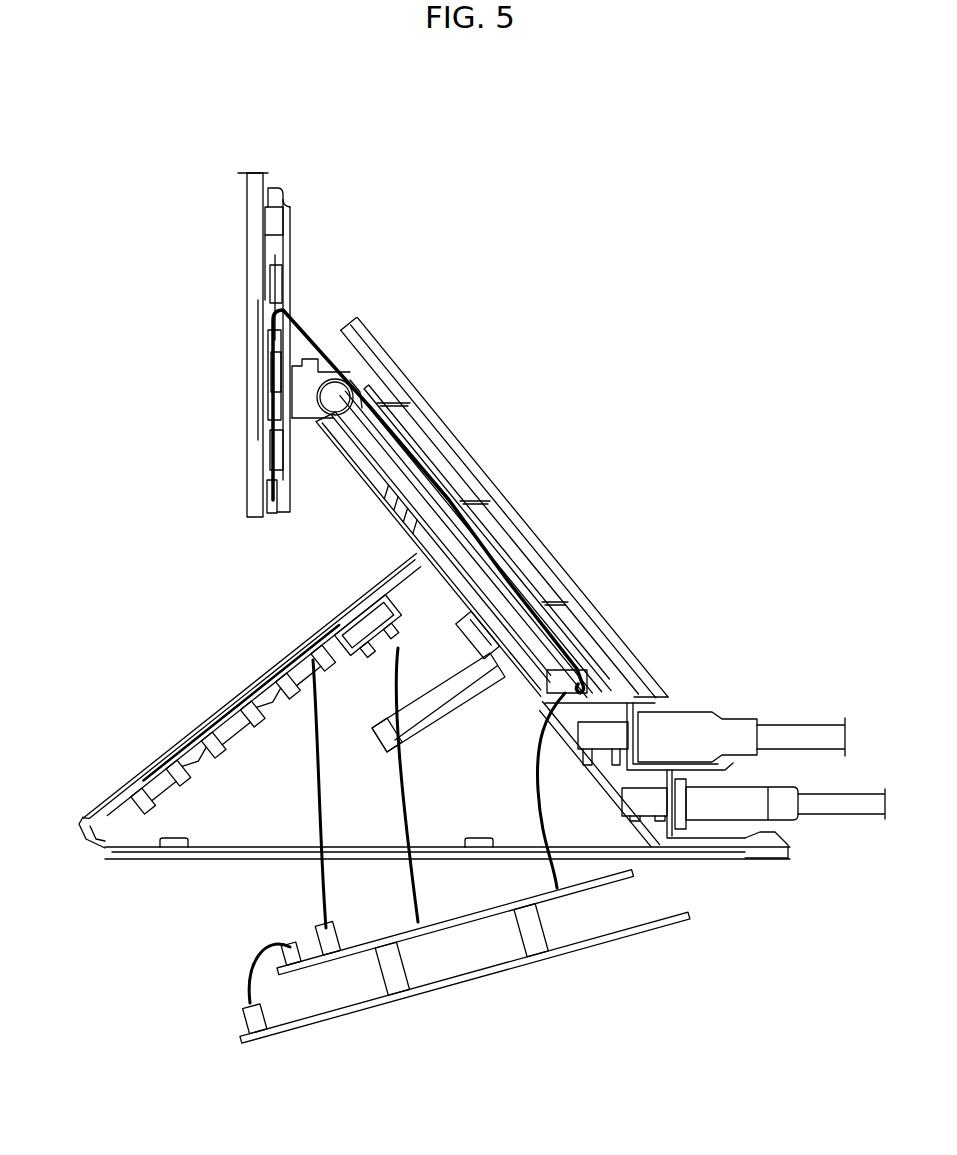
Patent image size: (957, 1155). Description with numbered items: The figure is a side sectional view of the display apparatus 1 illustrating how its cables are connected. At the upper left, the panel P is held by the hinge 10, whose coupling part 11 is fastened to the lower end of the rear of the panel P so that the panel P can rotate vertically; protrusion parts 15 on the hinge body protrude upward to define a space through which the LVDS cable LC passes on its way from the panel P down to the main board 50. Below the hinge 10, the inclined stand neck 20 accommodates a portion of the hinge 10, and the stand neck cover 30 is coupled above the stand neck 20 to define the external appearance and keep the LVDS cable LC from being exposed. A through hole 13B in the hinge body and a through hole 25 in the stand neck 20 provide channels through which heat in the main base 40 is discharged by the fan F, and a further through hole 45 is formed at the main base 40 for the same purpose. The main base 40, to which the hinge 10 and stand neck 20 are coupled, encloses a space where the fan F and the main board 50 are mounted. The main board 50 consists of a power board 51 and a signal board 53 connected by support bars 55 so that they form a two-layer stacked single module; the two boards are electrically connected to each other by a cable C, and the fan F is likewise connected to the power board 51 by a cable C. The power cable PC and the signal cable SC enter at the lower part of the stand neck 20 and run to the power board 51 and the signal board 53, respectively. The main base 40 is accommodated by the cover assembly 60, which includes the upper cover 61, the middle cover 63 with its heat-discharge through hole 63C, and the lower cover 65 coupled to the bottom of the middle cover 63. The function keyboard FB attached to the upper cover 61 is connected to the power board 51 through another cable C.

The display apparatus 1 is at (529, 87).
The hinge 10 is at (327, 329).
The coupling part 11 is at (287, 217).
The panel P is at (247, 285).
The protrusion parts 15 is at (382, 460).
The stand neck 20 is at (376, 518).
The through hole 25 is at (482, 600).
The stand neck cover 30 is at (458, 412).
The through hole 13B is at (530, 600).
The through hole 63C is at (540, 615).
The main base 40 is at (437, 615).
The through hole 45 is at (483, 632).
The fan F is at (410, 713).
The power cable PC is at (705, 717).
The signal cable SC is at (782, 813).
The LVDS cable LC is at (530, 768).
The cover assembly 60 is at (247, 692).
The upper cover 61 is at (260, 675).
The function keyboard FB is at (237, 733).
The cable C is at (318, 795).
The middle cover 63 is at (88, 840).
The lower cover 65 is at (183, 858).
The main board 50 is at (461, 968).
The power board 51 is at (313, 960).
The signal board 53 is at (500, 967).
The support bars 55 is at (545, 937).